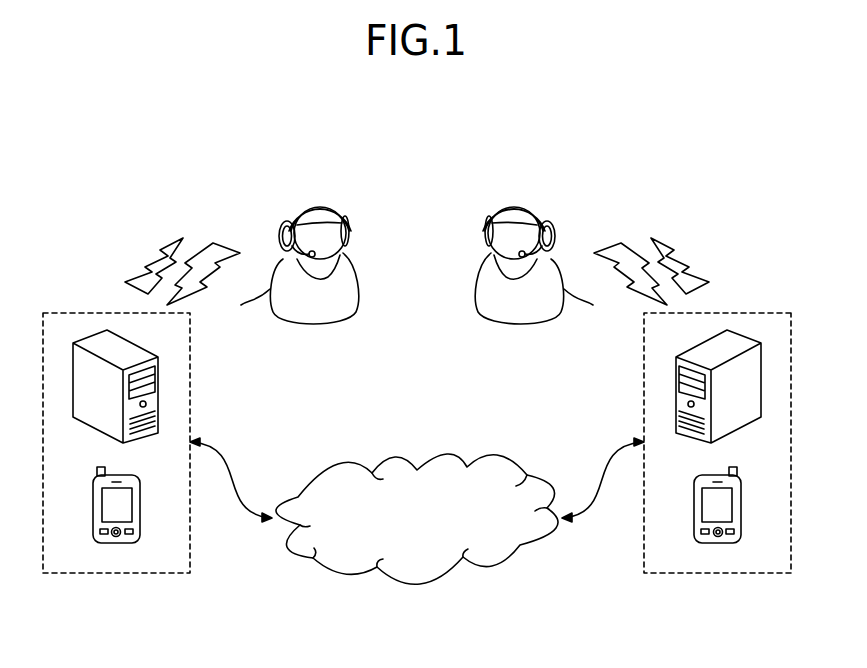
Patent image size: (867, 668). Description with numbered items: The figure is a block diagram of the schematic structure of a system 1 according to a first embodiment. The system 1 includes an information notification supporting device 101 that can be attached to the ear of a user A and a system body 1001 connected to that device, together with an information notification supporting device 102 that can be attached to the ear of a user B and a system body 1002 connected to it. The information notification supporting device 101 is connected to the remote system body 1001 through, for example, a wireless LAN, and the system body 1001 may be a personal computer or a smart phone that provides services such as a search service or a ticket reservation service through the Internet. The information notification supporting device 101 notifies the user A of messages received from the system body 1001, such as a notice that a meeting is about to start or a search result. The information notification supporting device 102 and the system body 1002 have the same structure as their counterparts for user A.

The system 1 is at (426, 133).
The information notification supporting device 101 is at (518, 200).
The information notification supporting device 102 is at (318, 200).
The system body 1001 is at (739, 573).
The system body 1002 is at (137, 573).